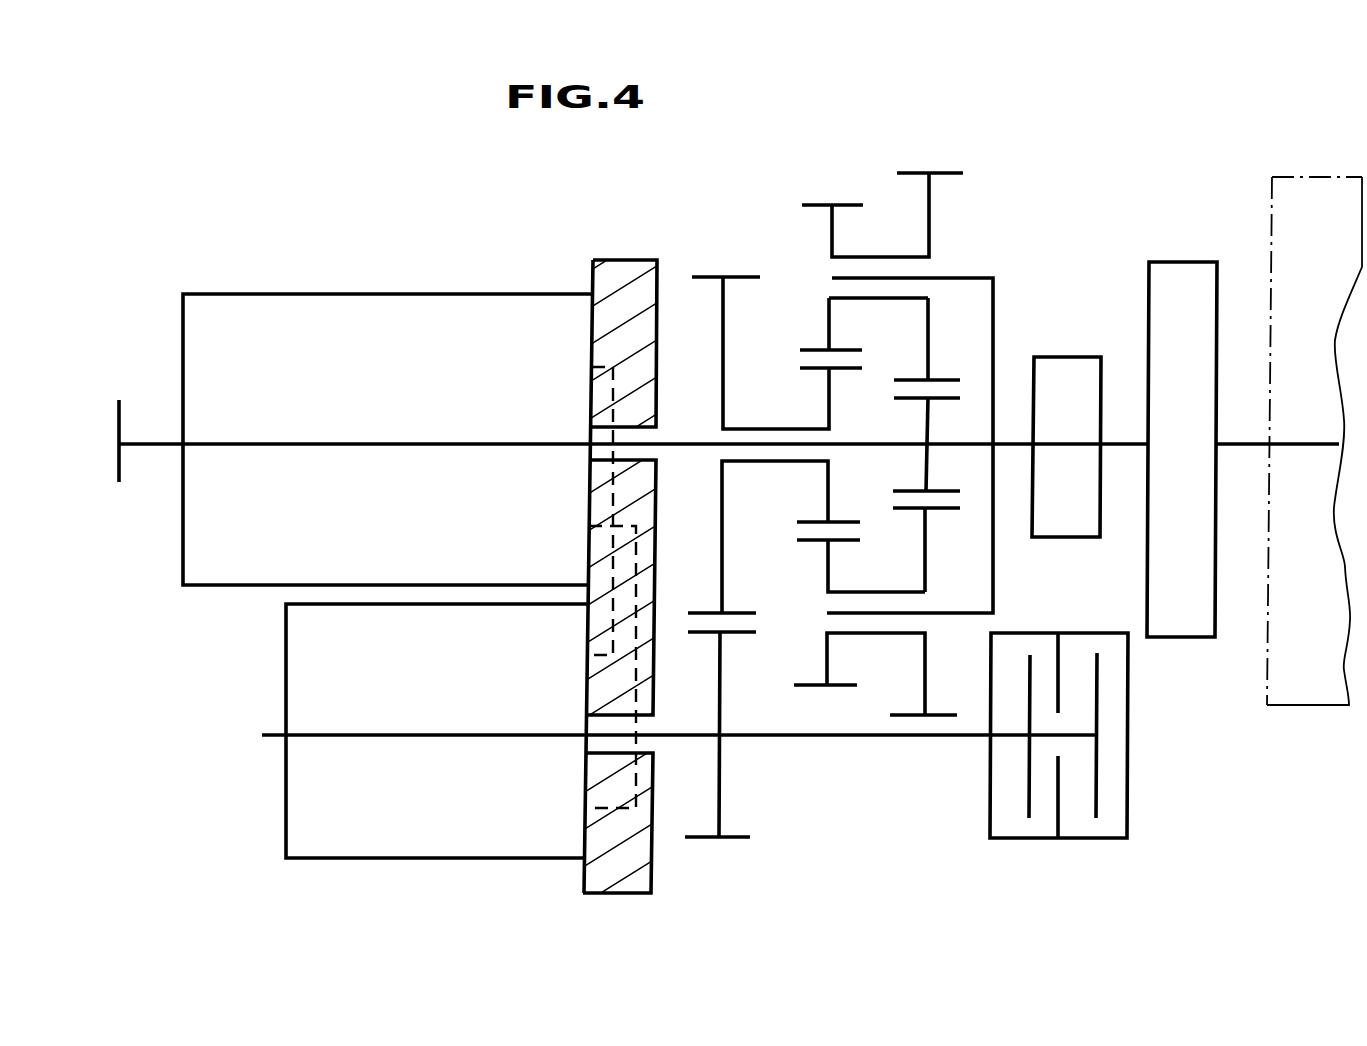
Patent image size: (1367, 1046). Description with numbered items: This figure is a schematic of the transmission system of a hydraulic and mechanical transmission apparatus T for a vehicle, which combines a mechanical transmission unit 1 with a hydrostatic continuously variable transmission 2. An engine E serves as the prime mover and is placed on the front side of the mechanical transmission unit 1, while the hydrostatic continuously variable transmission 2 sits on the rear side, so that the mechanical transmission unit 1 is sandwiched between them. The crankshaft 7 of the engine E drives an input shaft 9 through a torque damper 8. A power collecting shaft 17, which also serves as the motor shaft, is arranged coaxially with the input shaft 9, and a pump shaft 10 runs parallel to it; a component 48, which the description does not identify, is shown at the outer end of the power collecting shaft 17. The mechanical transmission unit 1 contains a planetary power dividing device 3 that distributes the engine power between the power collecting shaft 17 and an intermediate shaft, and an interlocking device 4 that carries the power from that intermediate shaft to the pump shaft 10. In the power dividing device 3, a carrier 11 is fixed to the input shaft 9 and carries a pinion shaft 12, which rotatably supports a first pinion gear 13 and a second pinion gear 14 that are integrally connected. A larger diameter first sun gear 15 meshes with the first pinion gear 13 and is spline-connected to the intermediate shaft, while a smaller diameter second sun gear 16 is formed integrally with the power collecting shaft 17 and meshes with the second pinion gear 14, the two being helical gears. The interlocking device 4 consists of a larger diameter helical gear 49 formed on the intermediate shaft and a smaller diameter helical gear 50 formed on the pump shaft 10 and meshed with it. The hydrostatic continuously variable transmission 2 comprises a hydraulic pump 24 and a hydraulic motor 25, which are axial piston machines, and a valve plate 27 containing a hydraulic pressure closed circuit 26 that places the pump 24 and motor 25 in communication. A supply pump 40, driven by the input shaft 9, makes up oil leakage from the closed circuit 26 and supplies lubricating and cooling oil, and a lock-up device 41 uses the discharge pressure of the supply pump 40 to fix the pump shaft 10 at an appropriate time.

The mechanical transmission unit 1 is at (818, 108).
The hydrostatic continuously variable transmission 2 is at (105, 658).
The power dividing device 3 is at (888, 220).
The interlocking device 4 is at (729, 262).
The crankshaft 7 is at (1297, 440).
The torque damper 8 is at (1187, 266).
The input shaft 9 is at (1012, 440).
The pump shaft 10 is at (413, 734).
The carrier 11 is at (997, 311).
The pinion shaft 12 is at (958, 278).
The first pinion gear 13 is at (832, 325).
The second pinion gear 14 is at (930, 355).
The first sun gear 15 is at (826, 495).
The second sun gear 16 is at (928, 466).
The power collecting shaft 17 is at (403, 443).
The hydraulic pump 24 is at (275, 684).
The hydraulic motor 25 is at (182, 597).
The hydraulic pressure closed circuit 26 is at (622, 392).
The valve plate 27 is at (622, 262).
The supply pump 40 is at (1062, 538).
The lock-up device 41 is at (1128, 795).
The brake 48 is at (118, 410).
The larger diameter helical gear 49 is at (726, 330).
The smaller diameter helical gear 50 is at (721, 690).
The hydraulic and mechanical transmission apparatus T is at (1018, 223).
The engine E is at (1307, 175).